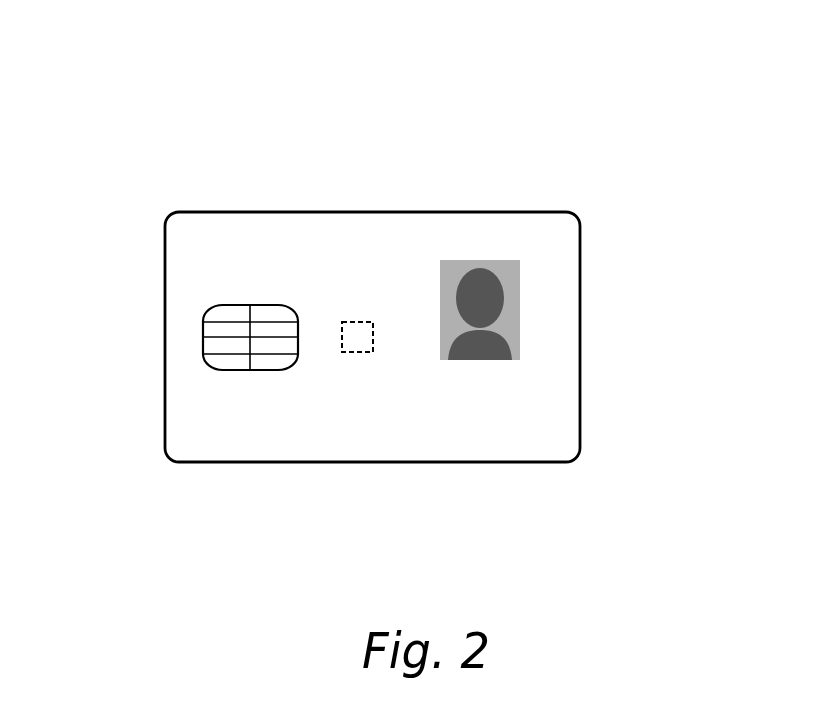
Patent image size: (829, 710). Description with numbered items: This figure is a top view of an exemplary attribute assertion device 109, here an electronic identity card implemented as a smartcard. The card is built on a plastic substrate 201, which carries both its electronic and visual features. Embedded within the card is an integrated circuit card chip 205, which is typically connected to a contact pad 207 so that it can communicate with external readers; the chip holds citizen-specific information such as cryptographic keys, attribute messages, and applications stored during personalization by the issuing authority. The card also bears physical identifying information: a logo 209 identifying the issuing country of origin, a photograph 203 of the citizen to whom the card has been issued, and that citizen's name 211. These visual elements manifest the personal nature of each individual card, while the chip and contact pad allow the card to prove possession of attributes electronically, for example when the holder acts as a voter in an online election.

The attribute assertion device 109 is at (126, 74).
The plastic substrate 201 is at (552, 462).
The photograph 203 is at (520, 340).
The embedded integrated circuit card chip 205 is at (360, 322).
The contact pad 207 is at (204, 326).
The logo 209 is at (248, 218).
The name 211 is at (377, 433).